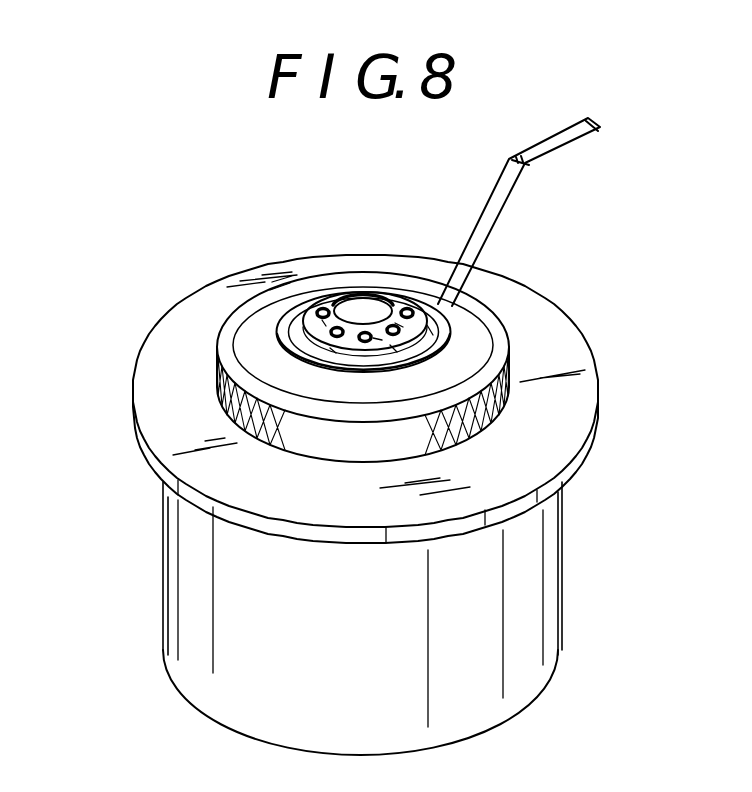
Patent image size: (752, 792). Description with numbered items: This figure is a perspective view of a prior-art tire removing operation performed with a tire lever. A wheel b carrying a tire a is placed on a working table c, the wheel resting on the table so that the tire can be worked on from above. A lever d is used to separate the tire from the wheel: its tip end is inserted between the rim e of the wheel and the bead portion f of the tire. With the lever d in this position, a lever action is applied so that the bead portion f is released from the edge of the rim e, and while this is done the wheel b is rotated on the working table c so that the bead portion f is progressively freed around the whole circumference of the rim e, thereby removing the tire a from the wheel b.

The tire a is at (222, 335).
The wheel b is at (347, 293).
The working table c is at (160, 386).
The lever d is at (496, 200).
The rim e is at (455, 315).
The bead portion f is at (425, 352).